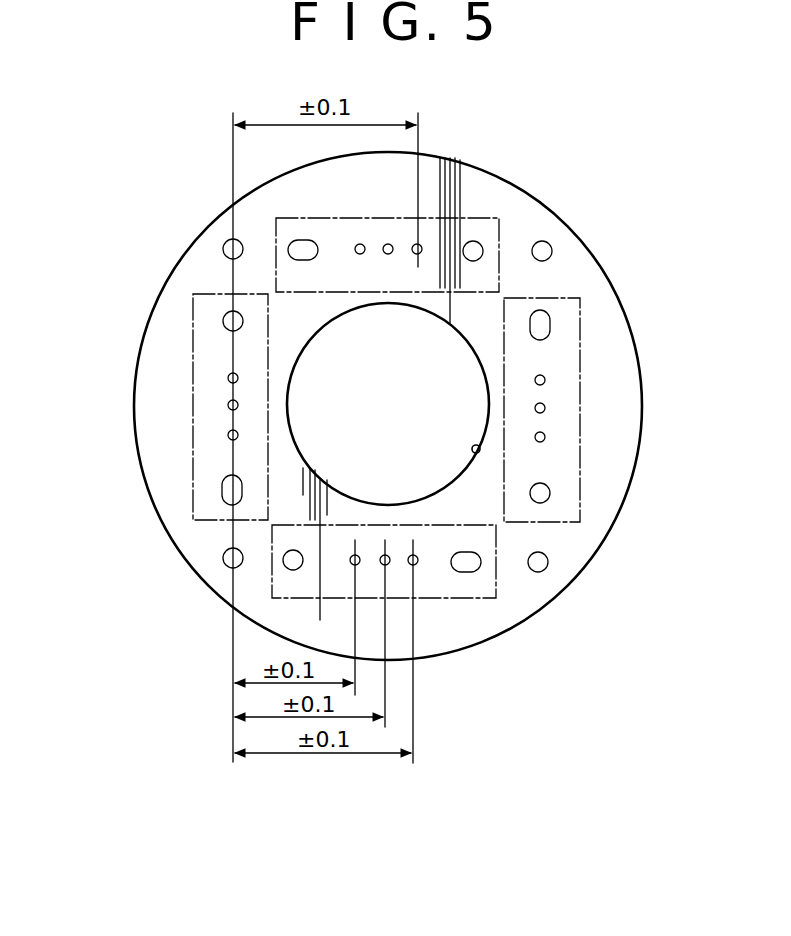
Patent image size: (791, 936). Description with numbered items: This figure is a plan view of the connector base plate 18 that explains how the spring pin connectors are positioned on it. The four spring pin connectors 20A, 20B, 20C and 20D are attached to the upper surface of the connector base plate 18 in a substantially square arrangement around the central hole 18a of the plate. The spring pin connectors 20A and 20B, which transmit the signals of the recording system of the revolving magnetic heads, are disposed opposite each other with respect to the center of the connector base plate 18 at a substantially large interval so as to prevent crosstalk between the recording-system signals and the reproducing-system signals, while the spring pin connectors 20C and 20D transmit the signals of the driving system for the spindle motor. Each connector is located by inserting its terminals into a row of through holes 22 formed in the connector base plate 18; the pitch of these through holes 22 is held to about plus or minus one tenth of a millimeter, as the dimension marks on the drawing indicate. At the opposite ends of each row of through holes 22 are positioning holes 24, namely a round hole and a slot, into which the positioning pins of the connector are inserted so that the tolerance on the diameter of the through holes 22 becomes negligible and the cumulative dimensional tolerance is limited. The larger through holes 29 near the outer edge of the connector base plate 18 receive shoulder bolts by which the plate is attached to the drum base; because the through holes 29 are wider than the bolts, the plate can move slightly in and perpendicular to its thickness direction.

The connector base plate 18 is at (165, 282).
The central hole 18a is at (478, 450).
The spring pin connector 20A is at (191, 345).
The spring pin connector 20B is at (584, 368).
The spring pin connector 20C is at (478, 601).
The spring pin connector 20D is at (320, 216).
The through holes 22 is at (416, 244).
The positioning holes 24 is at (301, 243).
The through holes 29 is at (224, 249).